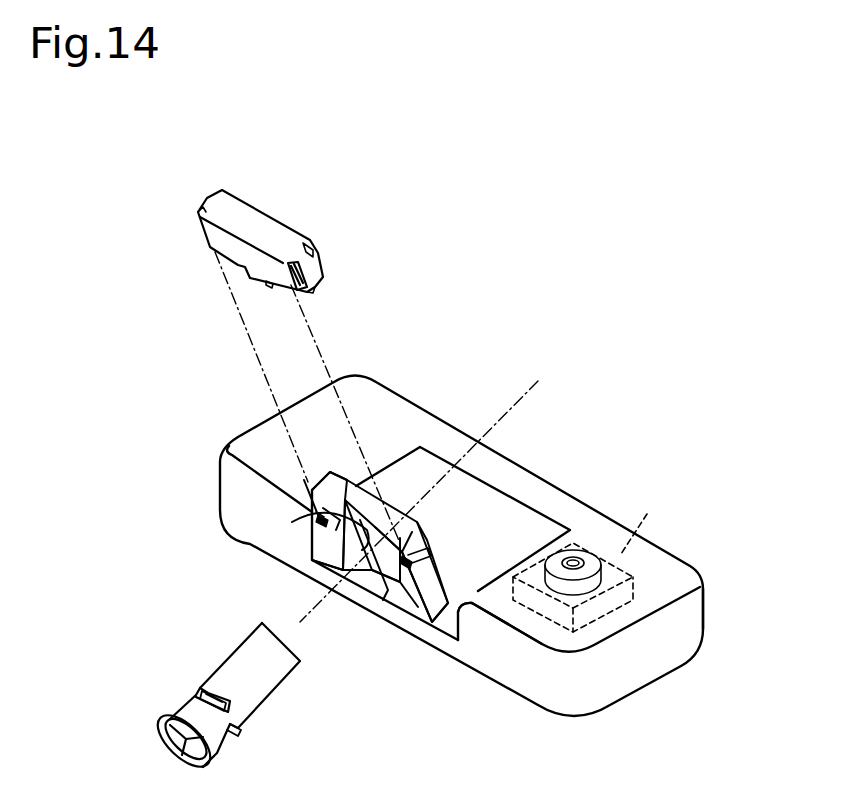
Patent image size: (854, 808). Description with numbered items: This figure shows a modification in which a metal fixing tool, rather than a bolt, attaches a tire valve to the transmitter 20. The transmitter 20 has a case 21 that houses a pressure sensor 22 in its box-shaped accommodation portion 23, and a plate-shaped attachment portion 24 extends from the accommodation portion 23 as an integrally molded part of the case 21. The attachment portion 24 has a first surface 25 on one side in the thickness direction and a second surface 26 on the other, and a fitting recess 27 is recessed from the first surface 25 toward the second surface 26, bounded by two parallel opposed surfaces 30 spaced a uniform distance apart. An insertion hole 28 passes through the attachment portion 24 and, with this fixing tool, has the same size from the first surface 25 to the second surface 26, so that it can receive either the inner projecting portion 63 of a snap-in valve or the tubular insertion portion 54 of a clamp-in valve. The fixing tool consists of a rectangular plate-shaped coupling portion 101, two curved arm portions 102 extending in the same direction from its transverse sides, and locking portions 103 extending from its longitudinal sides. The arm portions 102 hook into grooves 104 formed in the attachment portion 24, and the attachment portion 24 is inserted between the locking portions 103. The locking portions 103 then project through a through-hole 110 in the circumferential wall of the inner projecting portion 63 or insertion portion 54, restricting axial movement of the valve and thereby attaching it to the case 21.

The transmitter 20 is at (579, 498).
The case 21 is at (703, 647).
The pressure sensor 22 is at (589, 557).
The accommodation portion 23 is at (637, 673).
The attachment portion 24 is at (341, 556).
The first surface 25 is at (398, 612).
The second surface 26 is at (442, 602).
The fitting recess 27 is at (331, 471).
The insertion hole 28 is at (310, 562).
The opposed surfaces 30 is at (318, 520).
The insertion portion 54 is at (263, 711).
The inner projecting portion 63 is at (263, 711).
The coupling portion 101 is at (283, 247).
The arm portions 102 is at (200, 211).
The locking portions 103 is at (313, 245).
The grooves 104 is at (313, 512).
The through-hole 110 is at (190, 696).